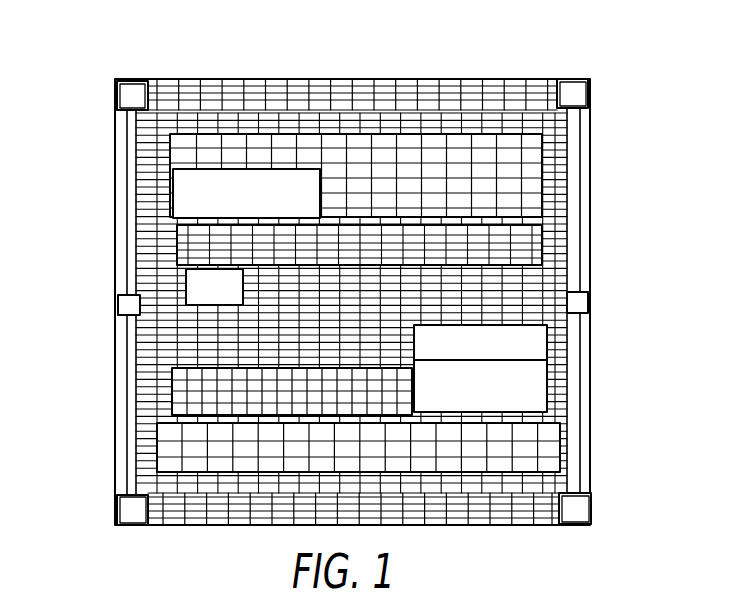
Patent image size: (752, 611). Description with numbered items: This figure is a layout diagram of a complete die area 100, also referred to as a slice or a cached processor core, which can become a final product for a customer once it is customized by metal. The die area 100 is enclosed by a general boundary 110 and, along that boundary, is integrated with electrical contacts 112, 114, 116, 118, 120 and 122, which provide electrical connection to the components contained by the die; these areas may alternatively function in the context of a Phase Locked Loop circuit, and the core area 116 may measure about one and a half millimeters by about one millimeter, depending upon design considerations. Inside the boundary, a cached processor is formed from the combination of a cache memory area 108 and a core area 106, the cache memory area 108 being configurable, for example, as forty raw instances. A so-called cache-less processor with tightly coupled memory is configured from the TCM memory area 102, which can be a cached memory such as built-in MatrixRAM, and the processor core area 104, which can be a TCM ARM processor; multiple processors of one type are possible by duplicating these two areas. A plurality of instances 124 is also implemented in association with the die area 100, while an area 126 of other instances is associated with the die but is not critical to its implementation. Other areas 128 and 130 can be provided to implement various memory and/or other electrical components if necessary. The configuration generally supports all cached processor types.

The complete die area 100 is at (353, 262).
The TCM memory area 102 is at (210, 193).
The processor core area 104 is at (200, 287).
The core area 106 is at (507, 348).
The cache memory area 108 is at (507, 385).
The general boundary 110 is at (592, 203).
The electrical contact 112 is at (578, 93).
The electrical contact 114 is at (130, 95).
The core area 116 is at (128, 303).
The electrical contact 118 is at (132, 511).
The electrical contact 120 is at (577, 505).
The electrical contact 122 is at (578, 302).
The plurality of instances 124 is at (343, 127).
The area of other instances 126 is at (512, 272).
The other area 128 is at (160, 386).
The other area 130 is at (146, 443).